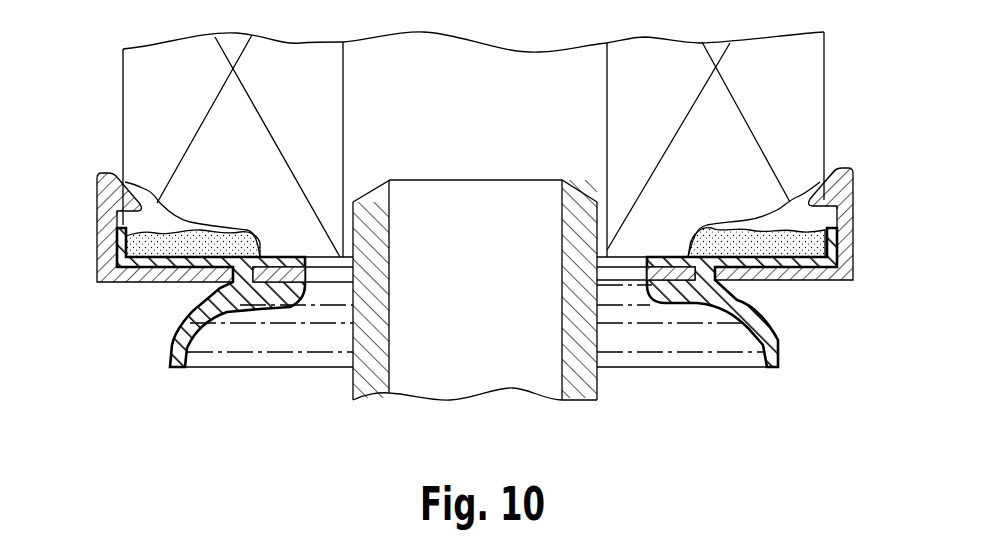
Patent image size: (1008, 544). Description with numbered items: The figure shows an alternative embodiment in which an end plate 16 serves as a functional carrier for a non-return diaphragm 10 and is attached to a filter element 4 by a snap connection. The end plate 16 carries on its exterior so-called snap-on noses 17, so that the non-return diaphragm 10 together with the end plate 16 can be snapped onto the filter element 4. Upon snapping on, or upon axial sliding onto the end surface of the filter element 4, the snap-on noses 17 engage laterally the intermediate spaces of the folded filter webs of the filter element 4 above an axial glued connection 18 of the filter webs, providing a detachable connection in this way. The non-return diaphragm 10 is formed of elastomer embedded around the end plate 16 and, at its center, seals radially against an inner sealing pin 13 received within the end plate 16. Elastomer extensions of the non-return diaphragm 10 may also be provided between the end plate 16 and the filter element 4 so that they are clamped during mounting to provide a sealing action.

The filter element 4 is at (327, 105).
The non-return diaphragm 10 is at (195, 338).
The inner sealing pin 13 is at (582, 373).
The end plate 16 is at (137, 285).
The snap-on noses 17 is at (130, 197).
The axial glued connection 18 is at (140, 248).